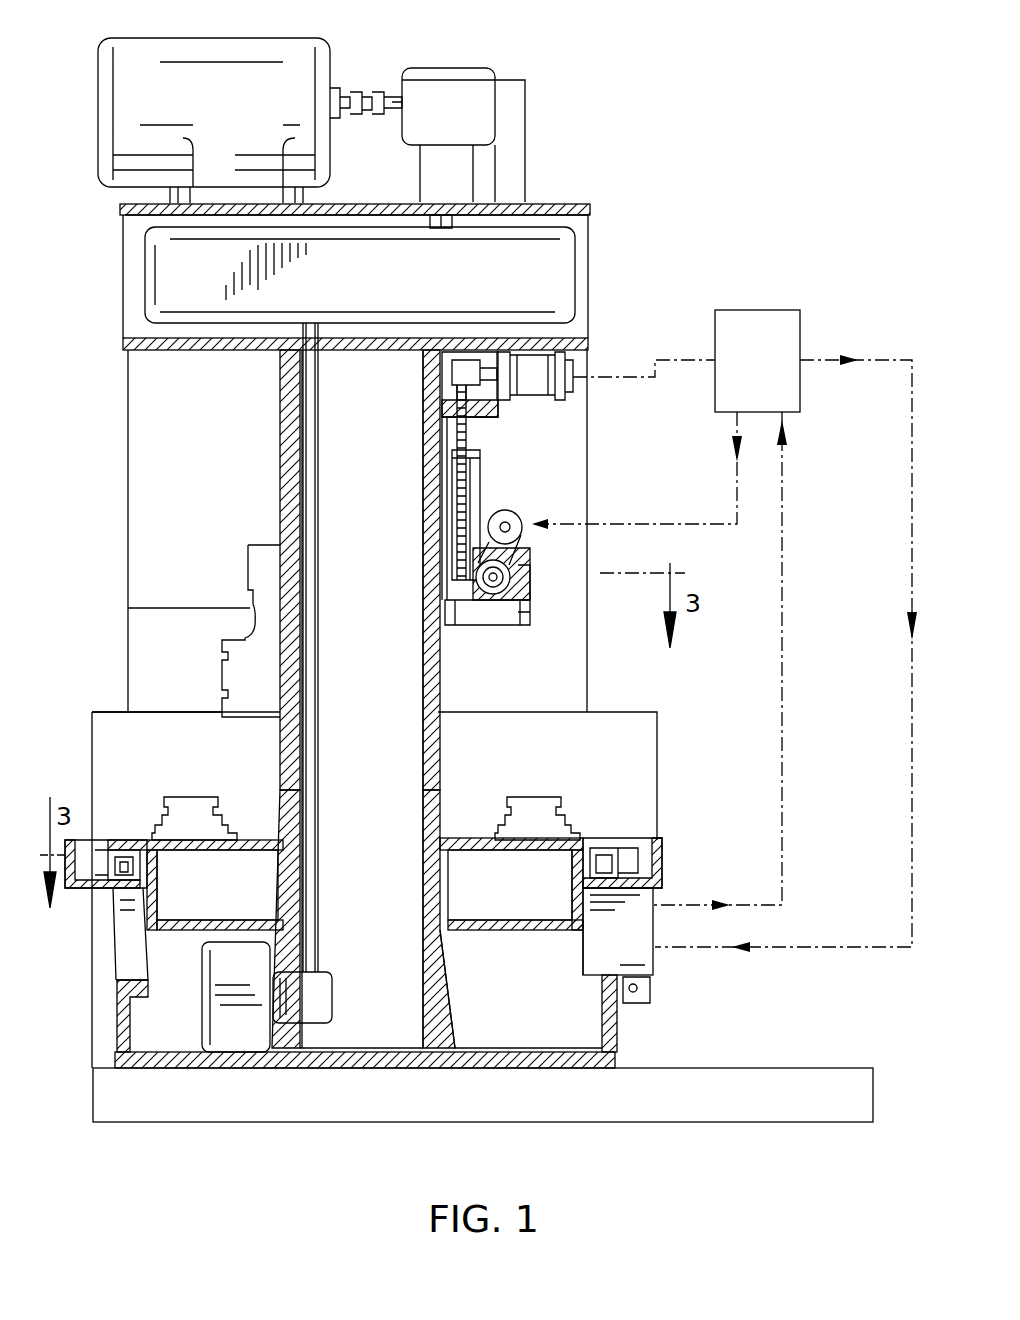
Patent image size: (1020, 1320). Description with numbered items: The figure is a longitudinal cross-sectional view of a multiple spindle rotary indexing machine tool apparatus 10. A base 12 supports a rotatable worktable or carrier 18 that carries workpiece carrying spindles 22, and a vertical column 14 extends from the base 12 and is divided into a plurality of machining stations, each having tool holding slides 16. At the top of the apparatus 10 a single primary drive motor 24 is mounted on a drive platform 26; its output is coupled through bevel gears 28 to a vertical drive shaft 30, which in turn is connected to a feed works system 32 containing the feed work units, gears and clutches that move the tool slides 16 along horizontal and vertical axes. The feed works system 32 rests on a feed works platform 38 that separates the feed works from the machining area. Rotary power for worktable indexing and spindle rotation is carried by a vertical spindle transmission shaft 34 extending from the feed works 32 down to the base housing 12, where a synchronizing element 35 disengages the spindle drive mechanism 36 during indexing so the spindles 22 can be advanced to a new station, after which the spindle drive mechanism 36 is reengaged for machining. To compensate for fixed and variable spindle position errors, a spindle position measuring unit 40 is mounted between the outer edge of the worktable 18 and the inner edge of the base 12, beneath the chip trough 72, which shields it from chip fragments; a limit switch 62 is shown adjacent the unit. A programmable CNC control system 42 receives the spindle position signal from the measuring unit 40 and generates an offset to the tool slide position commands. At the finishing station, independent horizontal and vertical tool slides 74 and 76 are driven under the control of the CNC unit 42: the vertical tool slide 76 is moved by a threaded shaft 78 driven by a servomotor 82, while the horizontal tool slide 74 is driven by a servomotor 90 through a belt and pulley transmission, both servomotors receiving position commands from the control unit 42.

The machine tool apparatus 10 is at (700, 105).
The base 12 is at (625, 1052).
The vertical column 14 is at (280, 398).
The tool holding slides 16 is at (248, 560).
The worktable 18 is at (157, 938).
The workpiece carrying spindles 22 is at (190, 797).
The primary drive motor 24 is at (295, 38).
The drive platform 26 is at (592, 212).
The bevel gears 28 is at (470, 80).
The vertical drive shaft 30 is at (440, 212).
The feed works system 32 is at (560, 282).
The vertical spindle transmission shaft 34 is at (318, 472).
The synchronizing element 35 is at (322, 1000).
The spindle drive mechanism 36 is at (262, 897).
The feed works platform 38 is at (588, 348).
The spindle position measuring unit 40 is at (633, 928).
The programmable control system 42 is at (785, 312).
The limit switch 62 is at (655, 987).
The chip trough 72 is at (95, 850).
The horizontal tool slide 74 is at (525, 615).
The vertical tool slide 76 is at (478, 480).
The threaded shaft 78 is at (470, 442).
The servomotor 82 is at (587, 392).
The servomotor 90 is at (518, 518).